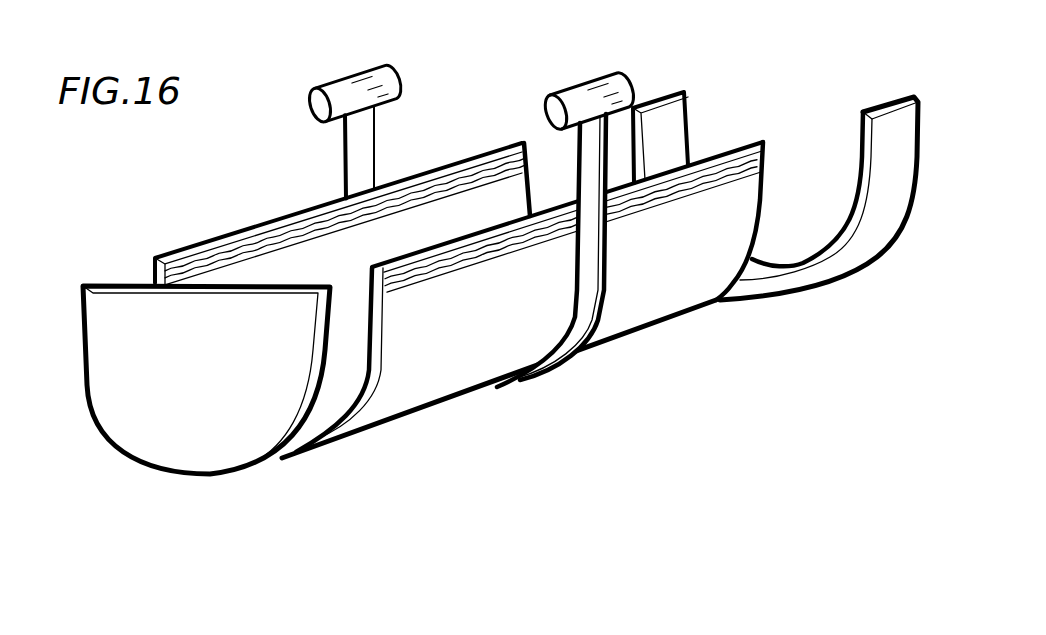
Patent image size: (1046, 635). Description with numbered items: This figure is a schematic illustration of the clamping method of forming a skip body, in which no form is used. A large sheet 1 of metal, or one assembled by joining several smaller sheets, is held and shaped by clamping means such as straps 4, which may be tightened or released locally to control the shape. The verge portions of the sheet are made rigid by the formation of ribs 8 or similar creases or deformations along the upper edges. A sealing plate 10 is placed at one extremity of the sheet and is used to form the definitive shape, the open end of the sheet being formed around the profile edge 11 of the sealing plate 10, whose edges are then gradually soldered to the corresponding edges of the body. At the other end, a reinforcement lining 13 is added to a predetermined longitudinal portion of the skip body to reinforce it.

The sheet of metal 1 is at (473, 377).
The straps 4 is at (587, 322).
The ribs 8 is at (465, 183).
The sealing plate 10 is at (247, 447).
The profile edge 11 is at (313, 410).
The reinforcement lining 13 is at (863, 243).